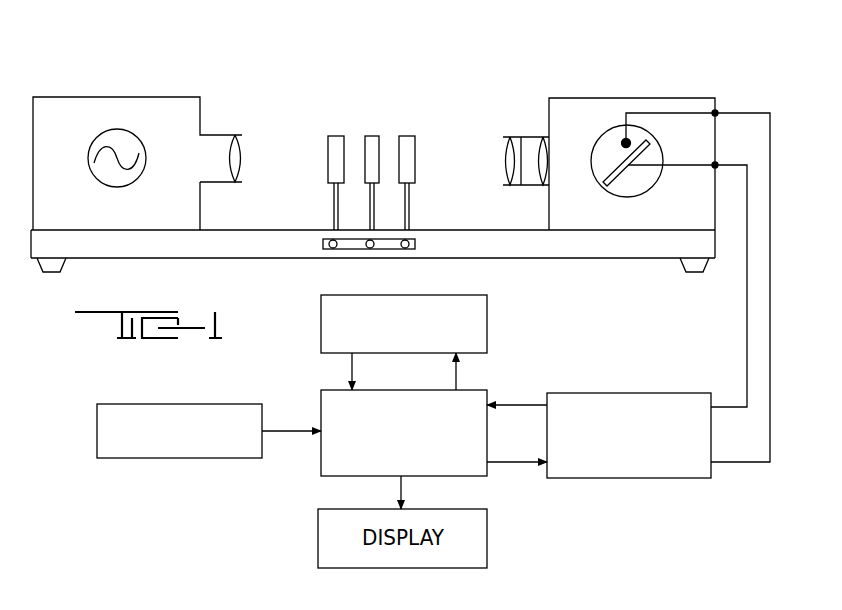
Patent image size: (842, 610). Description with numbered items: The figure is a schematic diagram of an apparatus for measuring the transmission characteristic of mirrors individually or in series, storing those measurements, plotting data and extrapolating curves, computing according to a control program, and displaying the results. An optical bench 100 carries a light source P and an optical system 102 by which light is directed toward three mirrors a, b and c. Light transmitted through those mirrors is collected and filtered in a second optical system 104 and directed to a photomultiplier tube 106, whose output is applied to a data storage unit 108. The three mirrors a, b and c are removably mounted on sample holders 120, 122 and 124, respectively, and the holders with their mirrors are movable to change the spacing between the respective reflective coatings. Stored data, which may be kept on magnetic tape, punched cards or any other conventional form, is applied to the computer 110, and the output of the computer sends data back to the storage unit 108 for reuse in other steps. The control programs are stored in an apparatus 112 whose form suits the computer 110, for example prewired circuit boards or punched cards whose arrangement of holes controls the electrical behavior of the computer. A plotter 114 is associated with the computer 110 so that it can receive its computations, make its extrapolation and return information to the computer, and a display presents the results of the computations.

The light source P is at (123, 127).
The optical bench 100 is at (197, 248).
The optical system 102 is at (242, 160).
The optical system 104 is at (503, 155).
The photomultiplier tube 106 is at (650, 188).
The data storage unit 108 is at (631, 478).
The computer 110 is at (321, 463).
The program storage apparatus 112 is at (140, 458).
The plotter 114 is at (488, 318).
The sample holder 120 is at (334, 210).
The sample holder 122 is at (410, 190).
The sample holder 124 is at (376, 222).
The mirror a is at (337, 135).
The mirror b is at (407, 135).
The mirror c is at (373, 135).